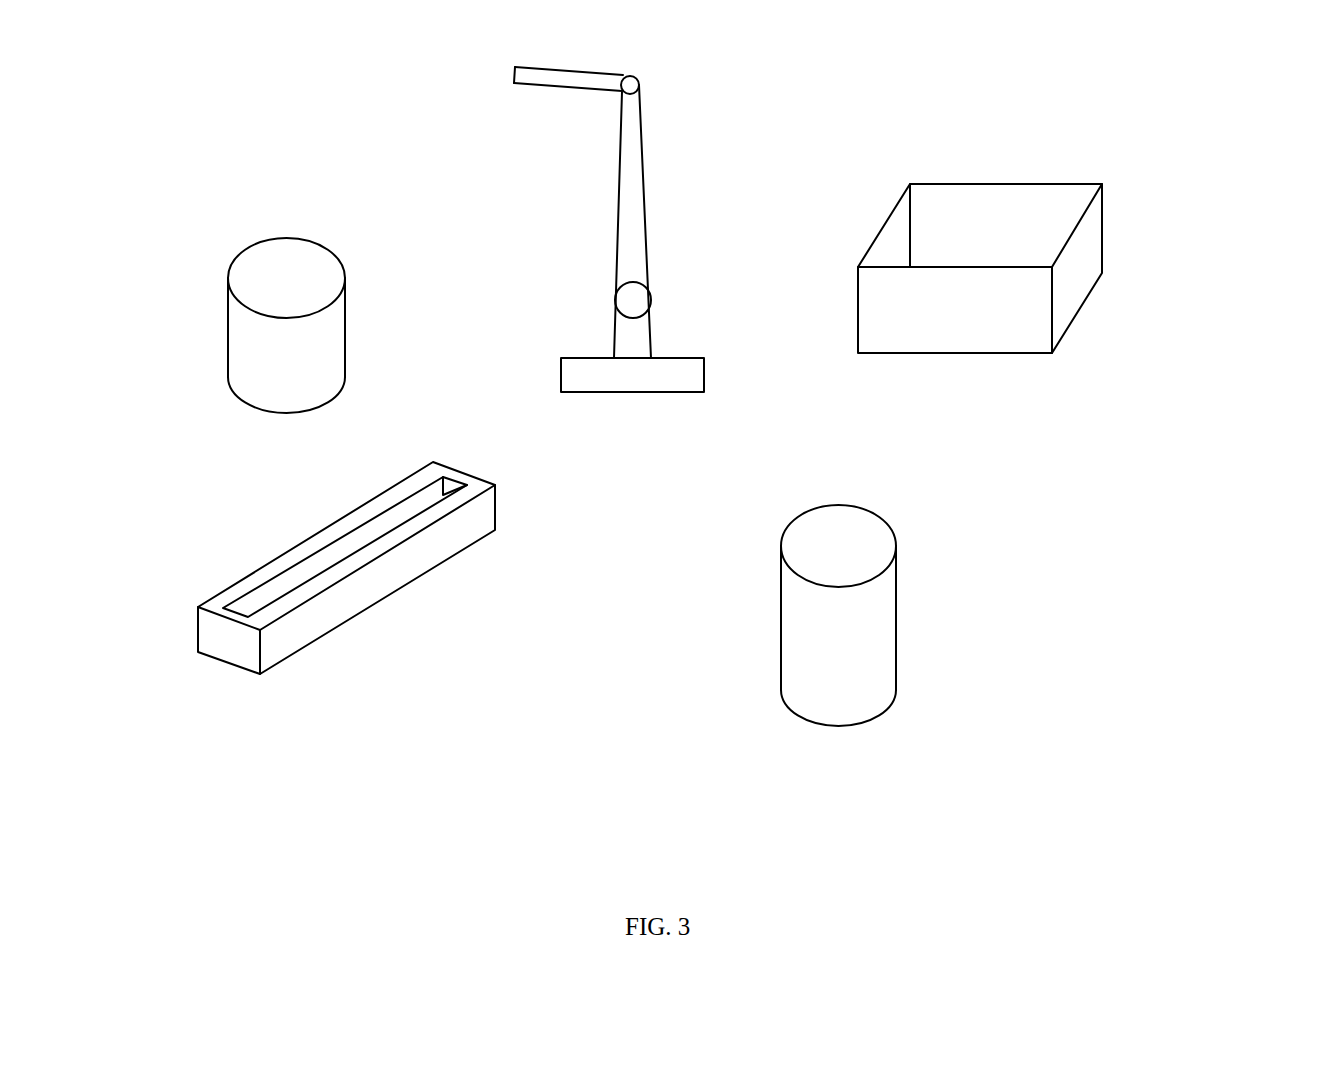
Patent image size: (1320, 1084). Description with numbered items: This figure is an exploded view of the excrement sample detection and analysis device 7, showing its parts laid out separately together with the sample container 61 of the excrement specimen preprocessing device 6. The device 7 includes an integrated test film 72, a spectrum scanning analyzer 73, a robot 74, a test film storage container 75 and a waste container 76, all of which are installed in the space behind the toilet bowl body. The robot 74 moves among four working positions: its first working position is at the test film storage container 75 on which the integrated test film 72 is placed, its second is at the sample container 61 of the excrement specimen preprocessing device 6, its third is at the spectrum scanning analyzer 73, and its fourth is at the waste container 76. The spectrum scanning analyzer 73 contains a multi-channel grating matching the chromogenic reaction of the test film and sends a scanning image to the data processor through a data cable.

The excrement sample detection and analysis device 7 is at (1055, 627).
The excrement specimen preprocessing device 6 is at (224, 325).
The sample container 61 is at (265, 353).
The integrated test film 72 is at (267, 597).
The spectrum scanning analyzer 73 is at (993, 205).
The robot 74 is at (645, 167).
The test film storage container 75 is at (306, 615).
The waste container 76 is at (896, 615).